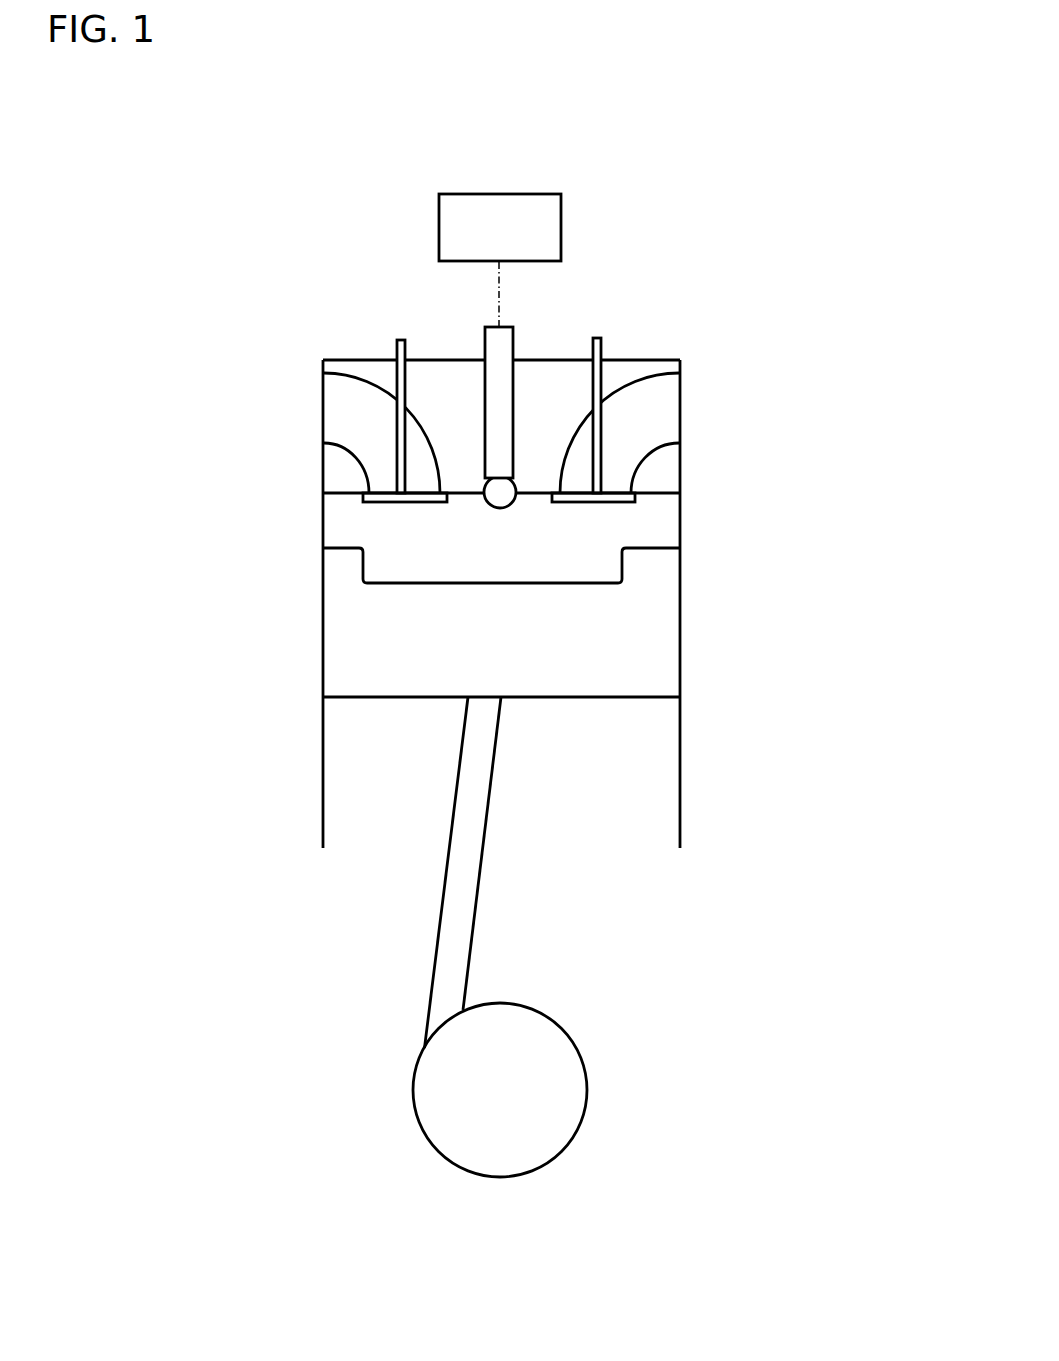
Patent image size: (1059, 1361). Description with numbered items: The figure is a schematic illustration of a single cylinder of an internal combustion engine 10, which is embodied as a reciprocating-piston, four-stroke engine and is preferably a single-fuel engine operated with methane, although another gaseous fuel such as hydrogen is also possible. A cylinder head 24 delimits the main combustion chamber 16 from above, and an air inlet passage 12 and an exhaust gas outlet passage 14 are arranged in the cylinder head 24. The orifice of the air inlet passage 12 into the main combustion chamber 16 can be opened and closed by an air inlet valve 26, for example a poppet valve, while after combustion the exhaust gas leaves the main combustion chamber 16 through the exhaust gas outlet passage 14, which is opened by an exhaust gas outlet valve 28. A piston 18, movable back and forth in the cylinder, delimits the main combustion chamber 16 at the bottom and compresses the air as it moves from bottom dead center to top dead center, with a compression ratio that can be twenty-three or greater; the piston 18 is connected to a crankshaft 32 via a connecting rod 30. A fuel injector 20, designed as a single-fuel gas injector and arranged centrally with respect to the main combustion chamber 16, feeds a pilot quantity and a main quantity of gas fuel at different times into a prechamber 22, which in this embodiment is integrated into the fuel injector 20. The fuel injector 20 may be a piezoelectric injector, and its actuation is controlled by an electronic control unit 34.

The internal combustion engine 10 is at (521, 103).
The air inlet passage 12 is at (332, 408).
The exhaust gas outlet passage 14 is at (668, 418).
The main combustion chamber 16 is at (658, 531).
The piston 18 is at (337, 633).
The fuel injector 20 is at (513, 352).
The prechamber 22 is at (505, 495).
The cylinder head 24 is at (337, 478).
The air inlet valve 26 is at (393, 343).
The exhaust gas outlet valve 28 is at (602, 350).
The connecting rod 30 is at (476, 897).
The crankshaft 32 is at (572, 1052).
The electronic control unit 34 is at (561, 218).